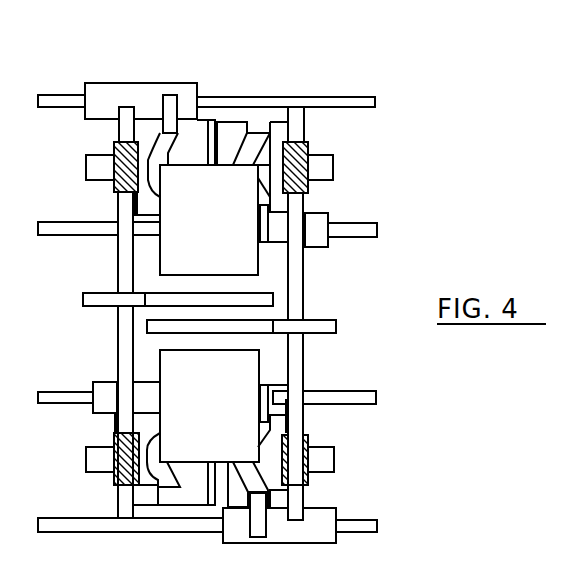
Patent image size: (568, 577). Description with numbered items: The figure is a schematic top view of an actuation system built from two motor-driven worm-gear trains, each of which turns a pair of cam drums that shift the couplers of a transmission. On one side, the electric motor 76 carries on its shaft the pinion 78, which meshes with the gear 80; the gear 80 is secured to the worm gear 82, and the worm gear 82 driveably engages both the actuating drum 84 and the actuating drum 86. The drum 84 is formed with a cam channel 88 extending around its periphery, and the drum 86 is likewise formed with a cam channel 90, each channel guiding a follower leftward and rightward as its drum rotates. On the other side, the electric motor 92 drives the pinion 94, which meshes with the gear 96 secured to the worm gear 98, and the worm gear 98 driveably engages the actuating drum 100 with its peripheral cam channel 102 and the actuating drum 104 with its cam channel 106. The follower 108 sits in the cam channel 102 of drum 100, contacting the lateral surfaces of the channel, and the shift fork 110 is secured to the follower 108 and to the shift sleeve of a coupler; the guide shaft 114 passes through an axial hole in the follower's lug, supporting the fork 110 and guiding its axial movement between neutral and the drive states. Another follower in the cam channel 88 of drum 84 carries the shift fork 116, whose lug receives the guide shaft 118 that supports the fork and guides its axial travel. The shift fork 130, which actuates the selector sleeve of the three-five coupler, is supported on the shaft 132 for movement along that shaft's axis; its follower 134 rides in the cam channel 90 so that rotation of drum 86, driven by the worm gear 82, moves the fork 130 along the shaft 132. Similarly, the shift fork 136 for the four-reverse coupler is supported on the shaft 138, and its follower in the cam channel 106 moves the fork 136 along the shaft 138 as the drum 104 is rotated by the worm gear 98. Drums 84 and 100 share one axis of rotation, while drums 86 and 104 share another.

The electric motor 76 is at (202, 406).
The pinion 78 is at (157, 333).
The gear 80 is at (330, 328).
The worm gear 82 is at (297, 289).
The actuating drum 84 is at (278, 137).
The actuating drum 86 is at (277, 498).
The cam channel 88 is at (261, 145).
The cam channel 90 is at (258, 483).
The electric motor 92 is at (211, 220).
The pinion 94 is at (157, 300).
The gear 96 is at (83, 303).
The worm gear 98 is at (127, 337).
The actuating drum 100 is at (140, 133).
The cam channel 102 is at (211, 143).
The actuating drum 104 is at (143, 495).
The cam channel 106 is at (148, 478).
The follower 108 is at (172, 100).
The shift fork 110 is at (118, 95).
The guide shaft 114 is at (63, 100).
The shift fork 116 is at (318, 223).
The guide shaft 118 is at (370, 232).
The shift fork 130 is at (325, 520).
The shaft 132 is at (368, 528).
The follower 134 is at (258, 523).
The shift fork 136 is at (112, 404).
The shaft 138 is at (52, 397).